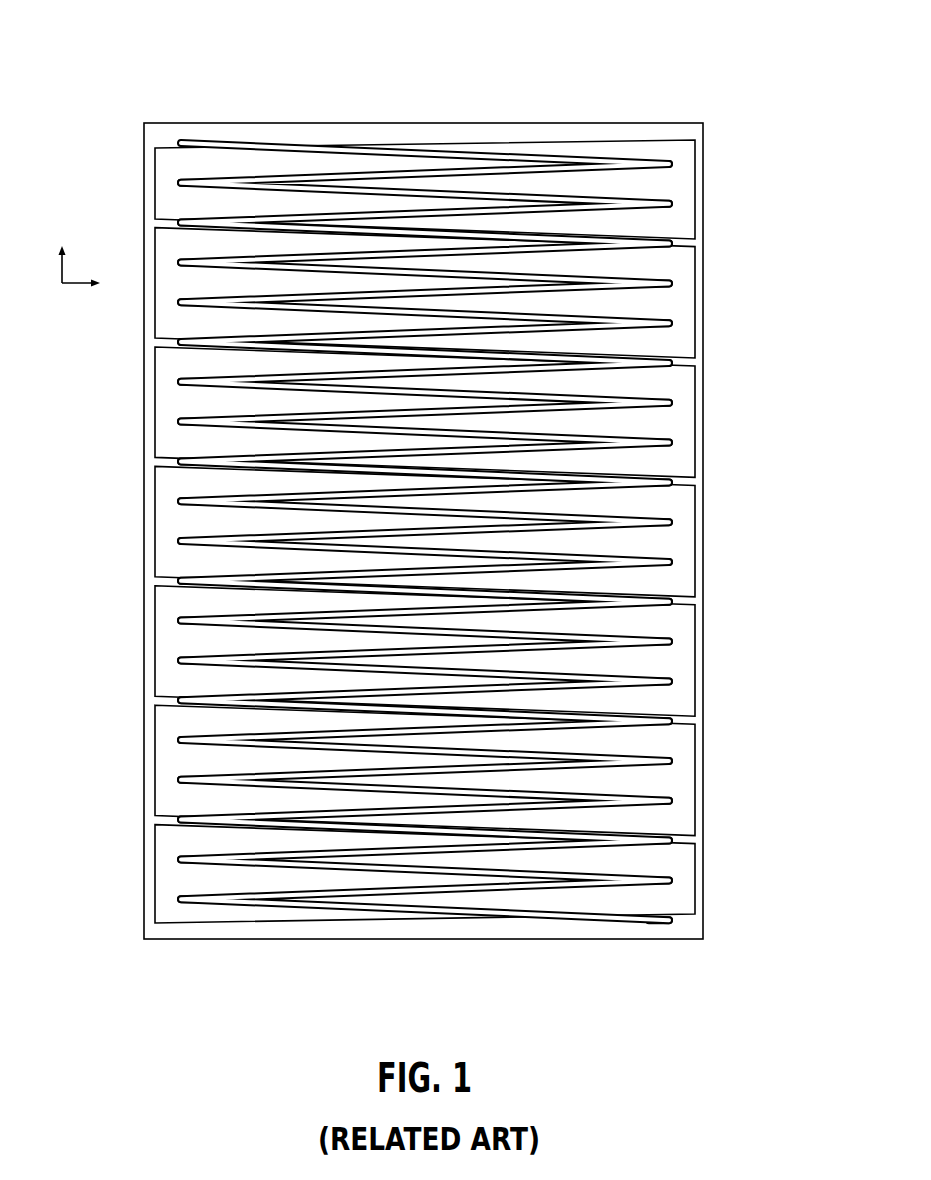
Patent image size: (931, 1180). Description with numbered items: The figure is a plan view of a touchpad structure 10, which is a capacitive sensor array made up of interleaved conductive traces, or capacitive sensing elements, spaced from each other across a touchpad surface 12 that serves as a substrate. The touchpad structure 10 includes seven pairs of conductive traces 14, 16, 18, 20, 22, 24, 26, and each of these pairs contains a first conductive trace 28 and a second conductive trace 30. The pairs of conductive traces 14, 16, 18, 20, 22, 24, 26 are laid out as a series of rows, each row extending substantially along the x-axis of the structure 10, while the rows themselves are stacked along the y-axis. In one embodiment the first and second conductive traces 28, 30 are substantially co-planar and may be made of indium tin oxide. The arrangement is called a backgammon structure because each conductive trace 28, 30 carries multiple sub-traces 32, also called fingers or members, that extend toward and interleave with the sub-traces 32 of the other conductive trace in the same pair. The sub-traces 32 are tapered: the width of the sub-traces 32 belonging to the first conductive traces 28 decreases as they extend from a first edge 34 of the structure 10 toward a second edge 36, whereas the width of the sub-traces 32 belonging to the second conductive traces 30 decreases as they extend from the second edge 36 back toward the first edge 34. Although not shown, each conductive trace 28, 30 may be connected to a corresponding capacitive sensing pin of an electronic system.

The touchpad structure 10 is at (570, 88).
The touchpad surface 12 is at (357, 121).
The pair of conductive traces 14 is at (710, 141).
The pair of conductive traces 16 is at (710, 248).
The pair of conductive traces 18 is at (710, 367).
The pair of conductive traces 20 is at (710, 486).
The pair of conductive traces 22 is at (710, 606).
The pair of conductive traces 24 is at (710, 725).
The pair of conductive traces 26 is at (710, 845).
The first conductive trace 28 is at (165, 176).
The second conductive trace 30 is at (680, 148).
The sub-traces 32 is at (193, 156).
The first edge 34 is at (110, 492).
The second edge 36 is at (745, 253).